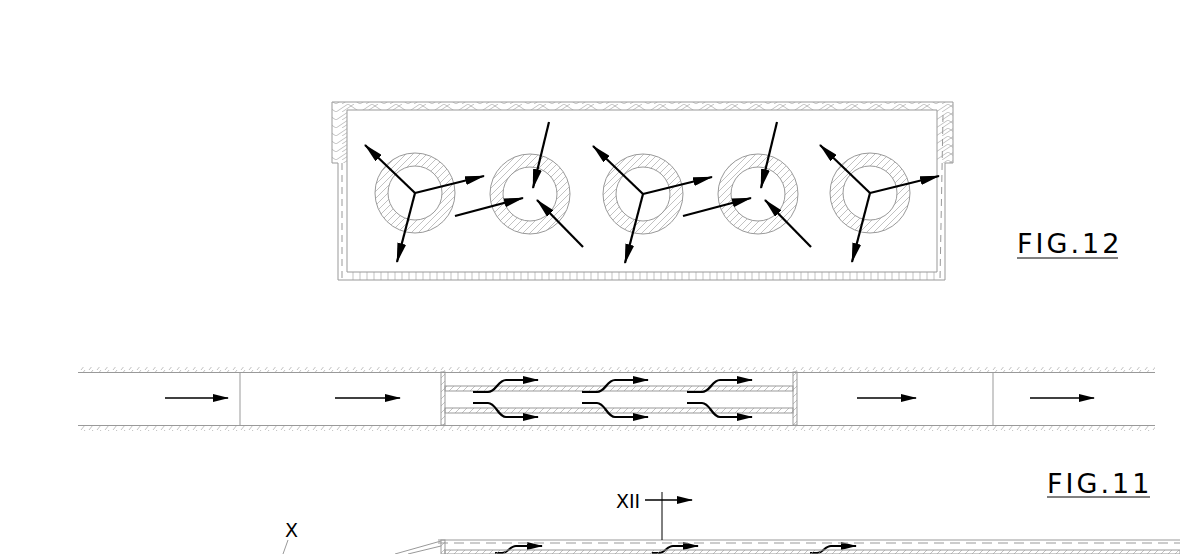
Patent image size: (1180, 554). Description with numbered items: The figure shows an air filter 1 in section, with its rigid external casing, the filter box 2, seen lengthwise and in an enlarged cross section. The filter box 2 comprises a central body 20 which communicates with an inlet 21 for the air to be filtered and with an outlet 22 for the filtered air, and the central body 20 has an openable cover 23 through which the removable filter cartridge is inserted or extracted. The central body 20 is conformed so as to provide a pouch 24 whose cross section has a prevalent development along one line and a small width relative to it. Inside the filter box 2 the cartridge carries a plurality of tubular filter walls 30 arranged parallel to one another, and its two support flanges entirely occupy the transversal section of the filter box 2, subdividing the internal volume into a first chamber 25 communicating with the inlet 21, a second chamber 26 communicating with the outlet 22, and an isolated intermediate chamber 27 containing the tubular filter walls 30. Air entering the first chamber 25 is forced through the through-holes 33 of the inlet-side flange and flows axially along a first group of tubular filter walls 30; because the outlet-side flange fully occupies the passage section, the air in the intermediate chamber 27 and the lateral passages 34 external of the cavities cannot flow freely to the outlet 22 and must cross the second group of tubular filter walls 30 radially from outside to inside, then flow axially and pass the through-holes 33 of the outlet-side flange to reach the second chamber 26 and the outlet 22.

In FIG. 12, the air filter 1 is at (276, 92).
In FIG. 11, the air filter 1 is at (100, 553).
In FIG. 12, the filter box 2 is at (590, 209).
In FIG. 11, the filter box 2 is at (616, 439).
In FIG. 12, the central body 20 is at (706, 281).
In FIG. 11, the central body 20 is at (545, 428).
In FIG. 11, the inlet 21 is at (132, 428).
In FIG. 11, the outlet 22 is at (1113, 370).
In FIG. 12, the openable cover 23 is at (668, 106).
In FIG. 11, the openable cover 23 is at (530, 371).
In FIG. 12, the pouch 24 is at (925, 199).
In FIG. 11, the first chamber 25 is at (303, 404).
In FIG. 11, the second chamber 26 is at (965, 411).
In FIG. 11, the intermediate chamber 27 is at (672, 420).
In FIG. 12, the tubular filter walls 30 is at (410, 160).
In FIG. 11, the tubular filter walls 30 is at (583, 385).
In FIG. 12, the through-holes 33 is at (520, 178).
In FIG. 11, the through-holes 33 is at (440, 540).
In FIG. 12, the lateral passages 34 is at (767, 258).